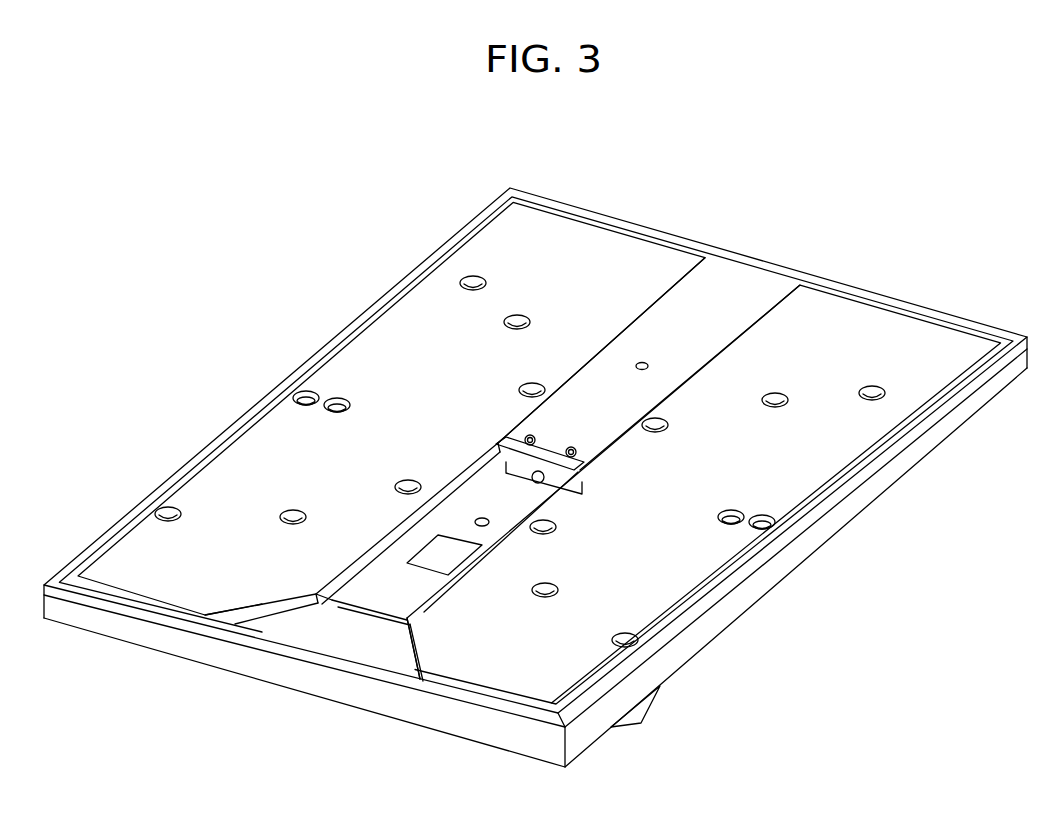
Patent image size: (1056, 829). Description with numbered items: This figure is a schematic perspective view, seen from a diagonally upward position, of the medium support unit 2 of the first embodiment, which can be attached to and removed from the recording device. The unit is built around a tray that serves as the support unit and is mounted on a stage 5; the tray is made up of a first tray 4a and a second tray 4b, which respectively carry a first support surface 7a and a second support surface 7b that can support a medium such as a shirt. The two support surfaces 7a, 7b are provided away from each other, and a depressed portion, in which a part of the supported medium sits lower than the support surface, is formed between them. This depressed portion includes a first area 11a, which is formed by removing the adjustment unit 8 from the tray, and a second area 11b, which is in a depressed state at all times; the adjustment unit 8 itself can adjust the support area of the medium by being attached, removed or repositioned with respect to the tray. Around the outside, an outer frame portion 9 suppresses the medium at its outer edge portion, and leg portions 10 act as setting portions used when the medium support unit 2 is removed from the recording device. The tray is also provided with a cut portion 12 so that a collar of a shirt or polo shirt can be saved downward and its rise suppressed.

The medium support unit 2 is at (886, 200).
The first tray 4a is at (222, 465).
The second tray 4b is at (790, 487).
The stage 5 is at (355, 605).
The first support surface 7a is at (348, 367).
The second support surface 7b is at (652, 593).
The adjustment unit 8 is at (731, 275).
The outer frame portion 9 is at (590, 732).
The leg portions 10 is at (640, 713).
The first area 11a is at (621, 345).
The second area 11b is at (476, 494).
The cut portion 12 is at (262, 606).